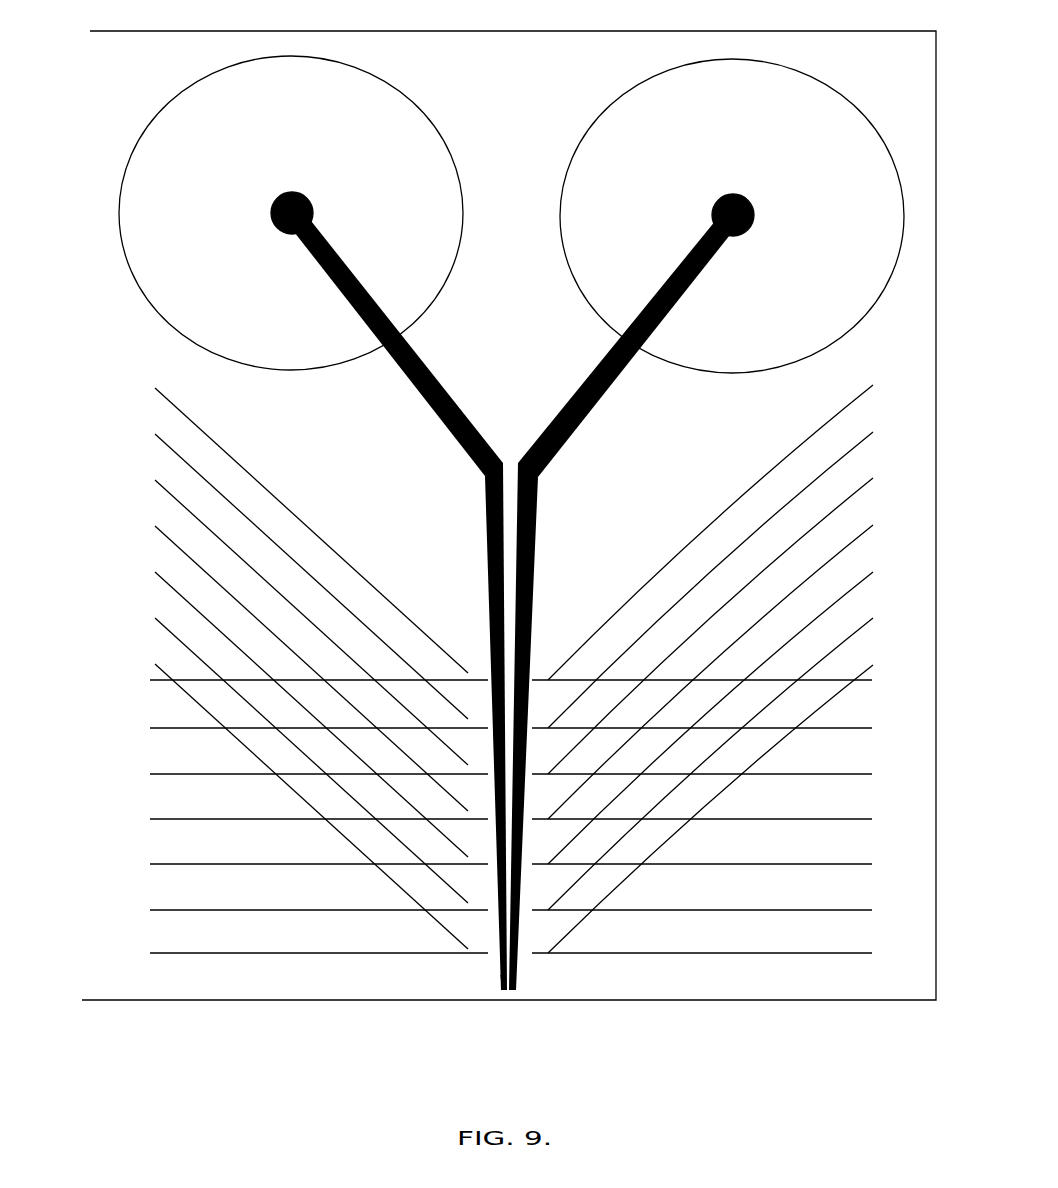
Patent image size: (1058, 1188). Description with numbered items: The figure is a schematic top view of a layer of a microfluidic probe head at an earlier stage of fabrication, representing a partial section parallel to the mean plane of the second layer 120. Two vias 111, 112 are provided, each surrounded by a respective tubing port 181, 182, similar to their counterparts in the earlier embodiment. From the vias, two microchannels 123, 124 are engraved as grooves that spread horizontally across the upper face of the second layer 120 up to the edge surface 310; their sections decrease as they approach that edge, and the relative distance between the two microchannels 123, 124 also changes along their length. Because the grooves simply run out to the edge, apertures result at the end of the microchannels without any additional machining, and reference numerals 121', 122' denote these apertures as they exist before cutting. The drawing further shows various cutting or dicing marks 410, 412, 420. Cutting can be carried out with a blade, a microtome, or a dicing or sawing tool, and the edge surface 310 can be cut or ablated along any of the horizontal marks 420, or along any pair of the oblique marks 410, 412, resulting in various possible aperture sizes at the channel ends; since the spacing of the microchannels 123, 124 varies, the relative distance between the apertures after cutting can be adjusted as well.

The via 111 is at (270, 219).
The via 112 is at (740, 235).
The second layer 120 is at (490, 780).
The aperture (before cutting) 121' is at (437, 1012).
The aperture (before cutting) 122' is at (557, 1018).
The microchannel 123 is at (477, 497).
The microchannel 124 is at (540, 513).
The tubing port 181 is at (315, 58).
The tubing port 182 is at (590, 130).
The edge surface 310 is at (232, 1002).
The cutting/dicing mark 410 is at (693, 550).
The cutting/dicing mark 412 is at (415, 628).
The cutting/dicing mark 420 is at (676, 952).